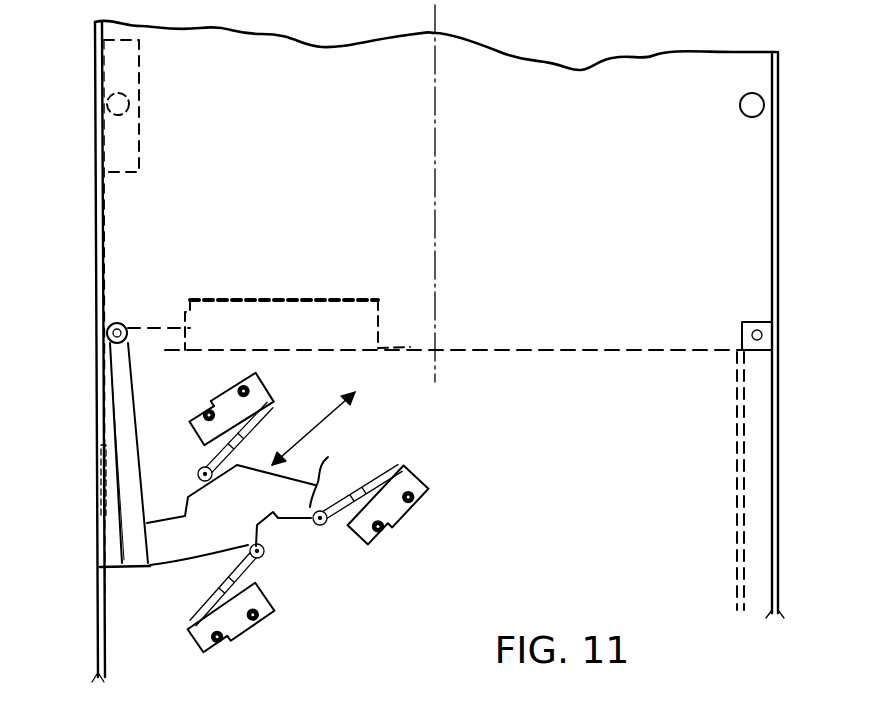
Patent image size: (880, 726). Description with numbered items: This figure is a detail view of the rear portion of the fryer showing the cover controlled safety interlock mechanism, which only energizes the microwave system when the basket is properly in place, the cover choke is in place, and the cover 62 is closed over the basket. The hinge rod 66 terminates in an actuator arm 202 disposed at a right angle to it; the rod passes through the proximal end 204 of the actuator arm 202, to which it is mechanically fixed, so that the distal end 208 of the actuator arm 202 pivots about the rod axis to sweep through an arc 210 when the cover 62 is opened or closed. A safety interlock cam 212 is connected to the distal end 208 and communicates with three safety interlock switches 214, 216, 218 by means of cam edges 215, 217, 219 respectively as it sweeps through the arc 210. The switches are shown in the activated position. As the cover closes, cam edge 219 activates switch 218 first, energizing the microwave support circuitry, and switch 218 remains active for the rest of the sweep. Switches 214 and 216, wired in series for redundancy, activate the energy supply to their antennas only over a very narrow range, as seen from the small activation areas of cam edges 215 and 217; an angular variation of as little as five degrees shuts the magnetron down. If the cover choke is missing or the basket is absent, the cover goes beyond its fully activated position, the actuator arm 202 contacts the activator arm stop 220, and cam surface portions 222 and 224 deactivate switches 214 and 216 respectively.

The cover 62 is at (318, 300).
The hinge rod 66 is at (108, 336).
The actuator arm 202 is at (122, 440).
The proximal end of actuator arm 204 is at (122, 348).
The distal end of actuator arm 208 is at (100, 567).
The arc 210 is at (313, 428).
The safety interlock cam 212 is at (158, 568).
The safety interlock switch 214 is at (202, 637).
The cam edge 215 is at (230, 550).
The safety interlock switch 216 is at (405, 480).
The cam edge 217 is at (330, 490).
The safety interlock switch 218 is at (257, 382).
The cam edge 219 is at (190, 495).
The activator arm stop 220 is at (100, 488).
The cam surface portion 222 is at (260, 527).
The cam surface portion 224 is at (331, 458).